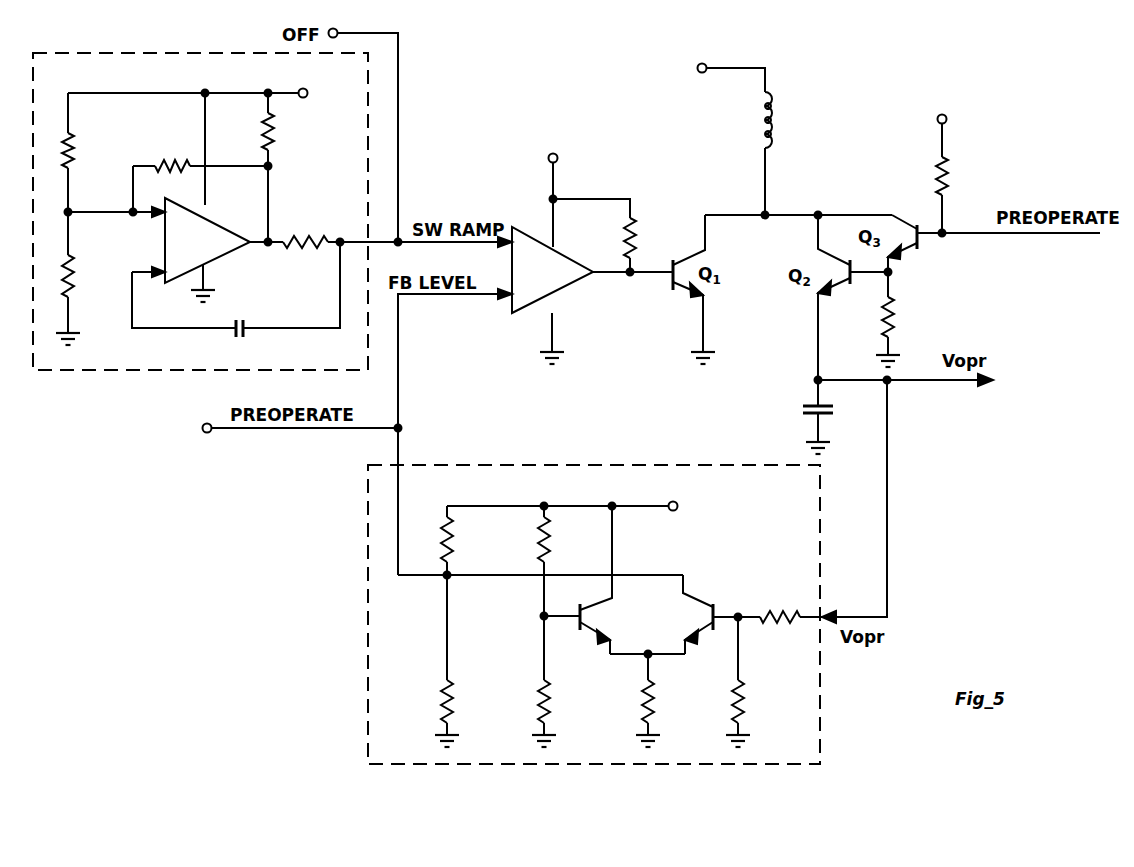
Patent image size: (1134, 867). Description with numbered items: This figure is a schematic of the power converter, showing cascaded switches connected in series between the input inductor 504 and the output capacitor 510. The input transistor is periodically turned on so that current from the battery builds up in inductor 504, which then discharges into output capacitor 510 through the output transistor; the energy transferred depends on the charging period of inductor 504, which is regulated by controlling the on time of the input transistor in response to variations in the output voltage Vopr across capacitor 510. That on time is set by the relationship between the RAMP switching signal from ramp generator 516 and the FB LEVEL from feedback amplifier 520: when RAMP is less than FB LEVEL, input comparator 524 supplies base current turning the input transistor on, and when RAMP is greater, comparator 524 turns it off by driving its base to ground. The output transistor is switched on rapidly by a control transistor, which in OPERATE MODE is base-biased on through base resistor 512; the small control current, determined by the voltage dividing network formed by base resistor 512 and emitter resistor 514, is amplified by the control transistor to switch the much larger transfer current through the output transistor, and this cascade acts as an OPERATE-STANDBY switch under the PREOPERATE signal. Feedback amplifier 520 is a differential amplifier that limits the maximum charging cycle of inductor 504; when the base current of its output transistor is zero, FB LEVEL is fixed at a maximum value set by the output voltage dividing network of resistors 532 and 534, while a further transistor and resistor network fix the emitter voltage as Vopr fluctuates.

The inductor 504 is at (777, 135).
The output capacitor 510 is at (835, 417).
The base resistor 512 is at (961, 174).
The emitter resistor 514 is at (904, 319).
The ramp generator 516 is at (210, 82).
The feedback amplifier 520 is at (530, 499).
The input comparator 524 is at (545, 283).
The output voltage dividing network resistor 532 is at (442, 540).
The output voltage dividing network resistor 534 is at (442, 661).